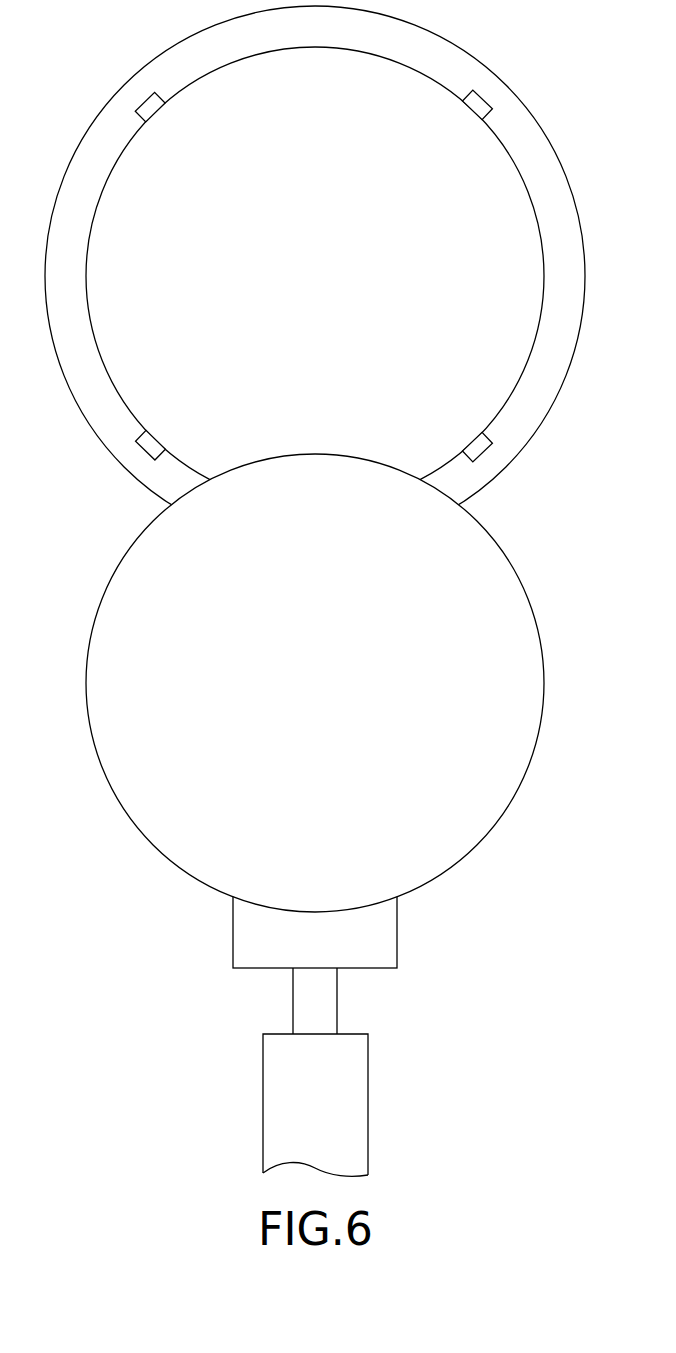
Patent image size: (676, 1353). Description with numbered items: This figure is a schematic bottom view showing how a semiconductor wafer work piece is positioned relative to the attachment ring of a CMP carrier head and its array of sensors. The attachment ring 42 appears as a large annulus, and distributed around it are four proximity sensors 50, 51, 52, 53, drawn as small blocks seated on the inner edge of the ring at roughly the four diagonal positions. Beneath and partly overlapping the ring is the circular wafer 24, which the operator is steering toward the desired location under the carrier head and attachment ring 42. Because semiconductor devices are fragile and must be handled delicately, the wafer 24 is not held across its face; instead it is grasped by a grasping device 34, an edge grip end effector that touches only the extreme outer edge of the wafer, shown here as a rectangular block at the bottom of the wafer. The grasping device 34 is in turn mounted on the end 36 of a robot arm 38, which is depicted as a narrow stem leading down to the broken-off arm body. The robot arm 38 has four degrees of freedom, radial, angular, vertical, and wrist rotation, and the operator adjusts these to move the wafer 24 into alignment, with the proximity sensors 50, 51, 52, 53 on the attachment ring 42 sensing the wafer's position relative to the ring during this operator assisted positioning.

The wafer 24 is at (525, 631).
The grasping device 34 is at (397, 948).
The end of robot arm 36 is at (337, 1008).
The robot arm 38 is at (368, 1087).
The attachment ring 42 is at (460, 68).
The proximity sensor 50 is at (472, 113).
The proximity sensor 51 is at (475, 440).
The proximity sensor 52 is at (157, 442).
The proximity sensor 53 is at (153, 112).